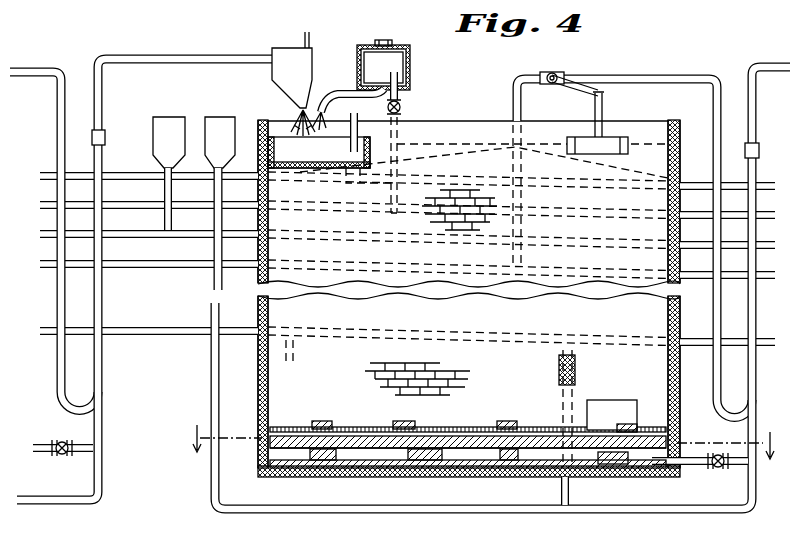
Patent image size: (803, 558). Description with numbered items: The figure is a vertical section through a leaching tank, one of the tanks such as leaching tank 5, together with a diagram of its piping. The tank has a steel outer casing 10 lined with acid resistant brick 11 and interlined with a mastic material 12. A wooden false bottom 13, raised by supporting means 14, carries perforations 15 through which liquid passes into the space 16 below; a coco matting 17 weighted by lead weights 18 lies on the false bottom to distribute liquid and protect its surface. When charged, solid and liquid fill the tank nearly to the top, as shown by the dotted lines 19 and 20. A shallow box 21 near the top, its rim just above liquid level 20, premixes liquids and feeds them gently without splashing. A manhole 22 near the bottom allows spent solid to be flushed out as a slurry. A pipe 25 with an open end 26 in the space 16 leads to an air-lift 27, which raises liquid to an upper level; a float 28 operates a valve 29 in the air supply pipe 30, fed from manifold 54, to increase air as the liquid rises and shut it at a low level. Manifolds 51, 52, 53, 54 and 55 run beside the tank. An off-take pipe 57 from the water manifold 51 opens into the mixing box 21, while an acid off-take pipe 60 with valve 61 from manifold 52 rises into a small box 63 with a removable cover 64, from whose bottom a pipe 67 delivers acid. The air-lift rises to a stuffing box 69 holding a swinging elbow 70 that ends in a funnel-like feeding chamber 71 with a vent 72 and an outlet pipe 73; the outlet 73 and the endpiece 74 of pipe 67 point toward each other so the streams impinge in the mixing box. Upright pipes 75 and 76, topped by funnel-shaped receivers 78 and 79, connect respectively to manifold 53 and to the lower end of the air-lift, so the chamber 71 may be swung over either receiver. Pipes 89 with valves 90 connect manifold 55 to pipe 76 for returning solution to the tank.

The leaching tank 5 is at (481, 442).
The outer casing 10 is at (257, 378).
The acid resistant brick 11 is at (270, 365).
The mastic material 12 is at (268, 388).
The false bottom 13 is at (274, 466).
The supporting means 14 is at (333, 458).
The perforations 15 is at (420, 470).
The space 16 is at (505, 470).
The coco matting 17 is at (360, 432).
The lead weights 18 is at (500, 426).
The dotted line for solid level 19 is at (442, 158).
The dotted line for liquid level 20 is at (489, 142).
The shallow box 21 is at (283, 122).
The manhole 22 is at (614, 400).
The pipe 25 is at (43, 445).
The open end 26 is at (648, 467).
The air-lift 27 is at (102, 386).
The float 28 is at (615, 150).
The valve 29 is at (556, 78).
The air supply pipe 30 is at (38, 69).
The manifold 51 is at (50, 172).
The manifold 52 is at (45, 202).
The manifold 53 is at (45, 231).
The manifold 54 is at (45, 261).
The manifold 55 is at (46, 329).
The off-take pipe 57 is at (350, 143).
The off-take pipe 60 is at (400, 94).
The valve 61 is at (401, 108).
The small box 63 is at (360, 72).
The removable cover 64 is at (408, 48).
The pipe 67 is at (352, 93).
The stuffing box 69 is at (106, 136).
The swinging elbow 70 is at (143, 54).
The feeding chamber 71 is at (283, 50).
The vent 72 is at (308, 40).
The outlet pipe 73 is at (288, 112).
The endpiece 74 is at (351, 122).
The upright pipe 75 is at (163, 194).
The upright pipe 76 is at (213, 194).
The funnel-shaped receiver 78 is at (163, 118).
The funnel-shaped receiver 79 is at (216, 118).
The pipe 89 is at (562, 404).
The valve 90 is at (559, 374).